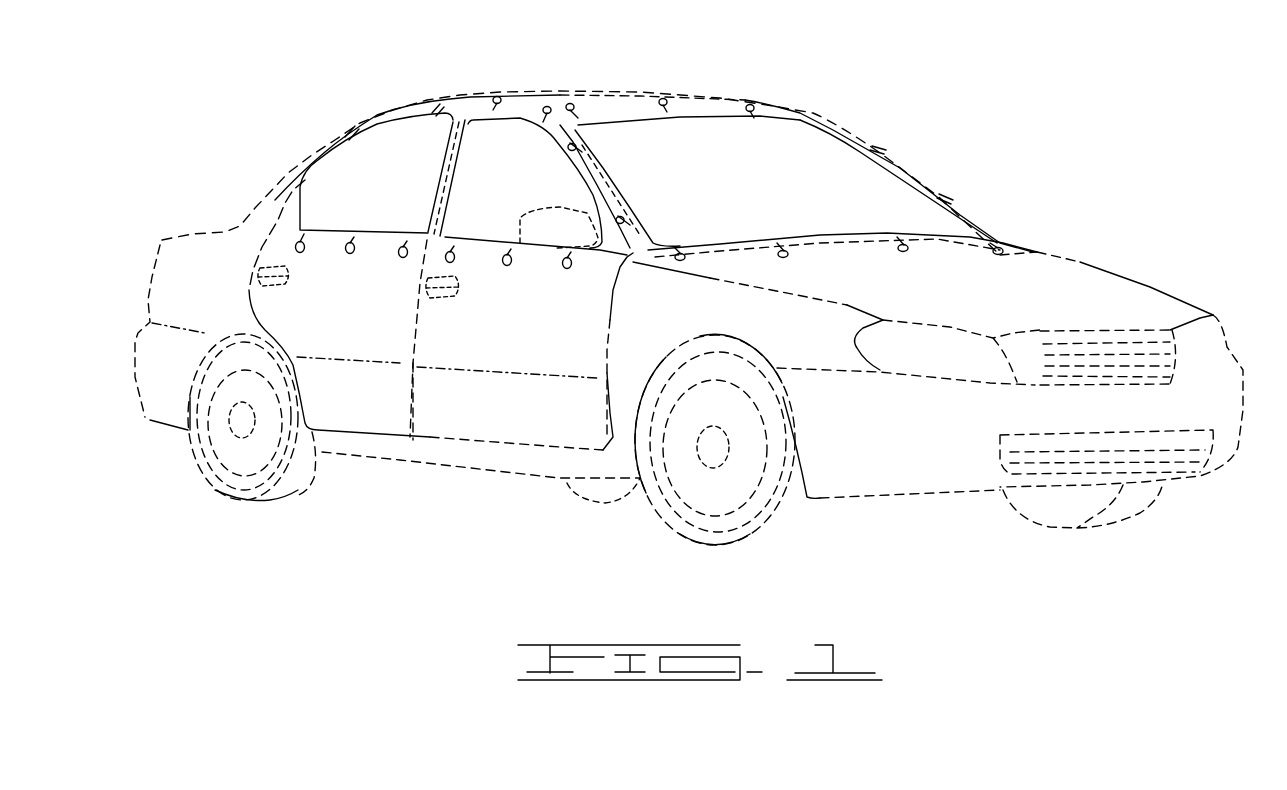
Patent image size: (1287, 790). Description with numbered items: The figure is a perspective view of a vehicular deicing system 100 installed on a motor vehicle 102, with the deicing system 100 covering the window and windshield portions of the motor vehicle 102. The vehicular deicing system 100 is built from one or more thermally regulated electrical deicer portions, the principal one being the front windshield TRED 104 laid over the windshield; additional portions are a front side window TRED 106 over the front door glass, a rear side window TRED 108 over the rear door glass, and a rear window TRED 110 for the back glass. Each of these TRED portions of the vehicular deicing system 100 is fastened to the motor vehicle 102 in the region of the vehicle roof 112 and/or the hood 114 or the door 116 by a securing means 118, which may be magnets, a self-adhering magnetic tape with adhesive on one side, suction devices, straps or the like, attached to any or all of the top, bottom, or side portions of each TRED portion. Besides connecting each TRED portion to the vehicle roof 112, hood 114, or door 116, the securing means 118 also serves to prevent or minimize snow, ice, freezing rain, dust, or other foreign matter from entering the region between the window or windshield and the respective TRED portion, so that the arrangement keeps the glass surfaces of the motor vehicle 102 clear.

The vehicular deicing system 100 is at (940, 94).
The motor vehicle 102 is at (1094, 246).
The front windshield TRED 104 is at (910, 213).
The front side window TRED 106 is at (517, 173).
The rear side window TRED 108 is at (348, 188).
The rear window TRED 110 is at (383, 100).
The vehicle roof 112 is at (630, 105).
The hood 114 is at (1097, 300).
The door 116 is at (487, 323).
The securing means 118 is at (790, 256).